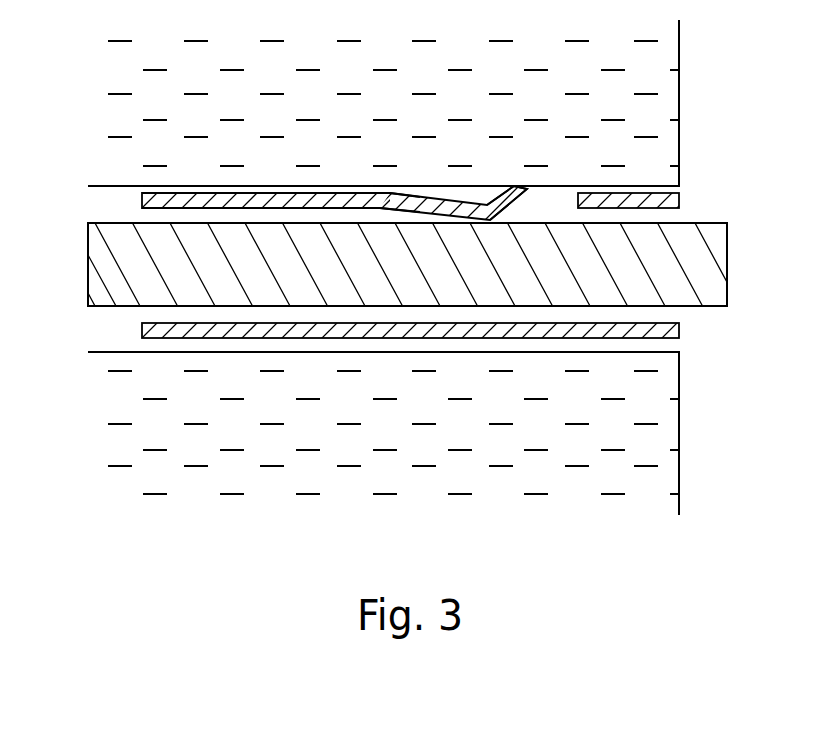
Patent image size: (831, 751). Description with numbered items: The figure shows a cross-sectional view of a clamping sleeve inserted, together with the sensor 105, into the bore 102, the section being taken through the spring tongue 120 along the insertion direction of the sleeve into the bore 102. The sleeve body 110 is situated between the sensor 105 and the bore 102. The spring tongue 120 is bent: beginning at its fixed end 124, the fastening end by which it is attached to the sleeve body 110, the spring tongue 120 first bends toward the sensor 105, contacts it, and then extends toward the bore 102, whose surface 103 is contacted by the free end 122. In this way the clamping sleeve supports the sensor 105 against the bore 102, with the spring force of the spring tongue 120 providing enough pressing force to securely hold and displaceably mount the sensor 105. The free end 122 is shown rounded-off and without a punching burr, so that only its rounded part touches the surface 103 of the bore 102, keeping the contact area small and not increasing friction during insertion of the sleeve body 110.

The bore 102 is at (140, 352).
The surface of the bore 103 is at (104, 190).
The sensor 105 is at (692, 266).
The sleeve body 110 is at (270, 197).
The spring tongue 120 is at (438, 192).
The free end 122 is at (523, 185).
The fixed end 124 is at (380, 196).